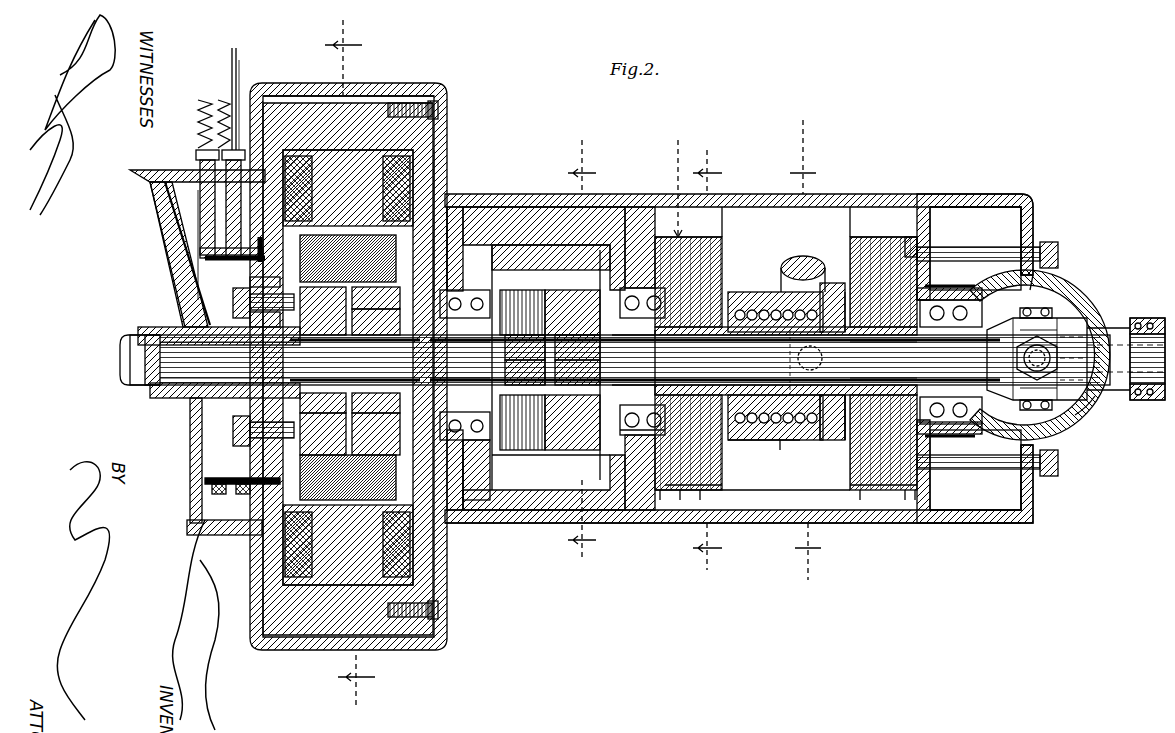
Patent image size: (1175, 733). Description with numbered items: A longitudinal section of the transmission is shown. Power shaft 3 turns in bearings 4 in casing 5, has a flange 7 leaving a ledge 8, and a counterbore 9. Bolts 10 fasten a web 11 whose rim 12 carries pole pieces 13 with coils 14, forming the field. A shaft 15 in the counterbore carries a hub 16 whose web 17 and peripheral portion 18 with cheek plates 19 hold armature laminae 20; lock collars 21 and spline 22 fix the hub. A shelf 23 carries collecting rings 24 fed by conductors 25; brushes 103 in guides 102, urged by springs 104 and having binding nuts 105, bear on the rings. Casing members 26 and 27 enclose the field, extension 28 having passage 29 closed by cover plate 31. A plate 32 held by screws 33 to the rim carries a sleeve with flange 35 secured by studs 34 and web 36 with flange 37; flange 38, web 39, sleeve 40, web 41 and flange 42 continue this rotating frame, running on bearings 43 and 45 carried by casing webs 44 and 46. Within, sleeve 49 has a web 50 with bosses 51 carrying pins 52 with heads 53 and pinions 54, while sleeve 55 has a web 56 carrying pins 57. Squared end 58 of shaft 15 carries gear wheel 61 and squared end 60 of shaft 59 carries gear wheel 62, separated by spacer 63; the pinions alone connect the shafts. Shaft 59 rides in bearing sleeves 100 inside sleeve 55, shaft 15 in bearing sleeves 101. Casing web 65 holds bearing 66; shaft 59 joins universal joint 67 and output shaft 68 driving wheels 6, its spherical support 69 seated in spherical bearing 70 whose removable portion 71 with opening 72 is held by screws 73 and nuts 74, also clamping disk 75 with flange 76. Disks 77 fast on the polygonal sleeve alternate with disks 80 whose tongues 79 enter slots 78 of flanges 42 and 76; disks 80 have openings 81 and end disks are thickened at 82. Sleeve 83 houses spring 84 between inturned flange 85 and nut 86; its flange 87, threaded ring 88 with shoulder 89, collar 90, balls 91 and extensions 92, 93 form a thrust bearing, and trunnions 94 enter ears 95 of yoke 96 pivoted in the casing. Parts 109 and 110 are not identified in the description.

The power shaft 3 is at (140, 385).
The bearings 4 is at (150, 330).
The inclosing casing 5 is at (145, 183).
The driving wheels 6 is at (582, 352).
The radially disposed flange 7 is at (240, 450).
The circumferential ledge 8 is at (240, 432).
The counterbore 9 is at (145, 360).
The bolts 10 is at (285, 245).
The web or disk 11 is at (260, 230).
The rim 12 is at (370, 96).
The pole pieces 13 is at (348, 188).
The coils 14 is at (437, 160).
The short shaft 15 is at (620, 360).
The hub 16 is at (245, 305).
The central radial web 17 is at (323, 311).
The axially expanded peripheral portion 18 is at (376, 298).
The cheek plates 19 is at (420, 215).
The ring laminae 20 is at (323, 434).
The lock collars 21 is at (108, 418).
The key or spline 22 is at (376, 322).
The cylindrical shelf 23 is at (252, 525).
The collecting rings 24 is at (220, 490).
The conductors 25 is at (225, 470).
The casing member 26 is at (280, 83).
The matching casing member 27 is at (432, 100).
The casing extension 28 is at (787, 523).
The passage 29 is at (535, 240).
The cover plate 31 is at (725, 225).
The plate 32 is at (447, 200).
The screws 33 is at (436, 108).
The screw studs 34 is at (376, 433).
The radial flange 35 is at (458, 265).
The radial web 36 is at (462, 285).
The peripheral flange 37 is at (505, 510).
The flange 38 is at (622, 435).
The radial web 39 is at (645, 430).
The sleeve 40 is at (684, 590).
The radially extended web 41 is at (682, 495).
The peripheral flange 42 is at (656, 206).
The anti-friction bearing 43 is at (470, 510).
The casing web 44 is at (348, 545).
The anti-friction bearing 45 is at (655, 440).
The casing web 46 is at (648, 245).
The sleeve 49 is at (465, 470).
The axially extended web 50 is at (525, 374).
The bosses 51 is at (523, 570).
The stud pins 52 is at (617, 144).
The head 53 is at (615, 250).
The pinions 54 is at (535, 290).
The sleeve 55 is at (786, 361).
The axially extended web 56 is at (636, 360).
The headed pins 57 is at (478, 510).
The squared end 58 is at (525, 350).
The shaft 59 is at (951, 362).
The squared end 60 is at (577, 374).
The gear wheel 61 is at (505, 245).
The gear wheel 62 is at (577, 344).
The spacer 63 is at (578, 290).
The radial web 65 is at (935, 235).
The anti-friction bearing 66 is at (1030, 275).
The universal joint 67 is at (1050, 340).
The shaft 68 is at (1145, 380).
The spherical support 69 is at (1060, 310).
The spherical bearing 70 is at (1000, 440).
The removable portion 71 is at (1080, 435).
The central opening 72 is at (1112, 330).
The screws 73 is at (960, 553).
The nut 74 is at (1058, 245).
The web or disk 75 is at (945, 245).
The peripheral flange 76 is at (890, 490).
The disks 77 is at (735, 240).
The slots 78 is at (705, 490).
The tongues 79 is at (728, 490).
The disks 80 is at (718, 490).
The central opening 81 is at (845, 495).
The thickened portion 82 is at (728, 430).
The sleeve 83 is at (745, 295).
The spring 84 is at (828, 283).
The inturned flange 85 is at (735, 292).
The nut 86 is at (822, 440).
The outturned radial flange 87 is at (880, 240).
The internally threaded ring 88 is at (770, 442).
The shoulder 89 is at (790, 262).
The collar 90 is at (808, 442).
The balls 91 is at (855, 295).
The extension 92 is at (807, 429).
The extension 93 is at (840, 430).
The trunnions 94 is at (828, 362).
The ears 95 is at (785, 358).
The yoke 96 is at (825, 230).
The inner shoulders 100 is at (766, 360).
The bearing sleeves 101 is at (325, 360).
The guides 102 is at (135, 185).
The brushes 103 is at (205, 163).
The springs 104 is at (224, 91).
The binding nuts 105 is at (240, 150).
The spring 109 is at (200, 130).
The spring 110 is at (222, 110).